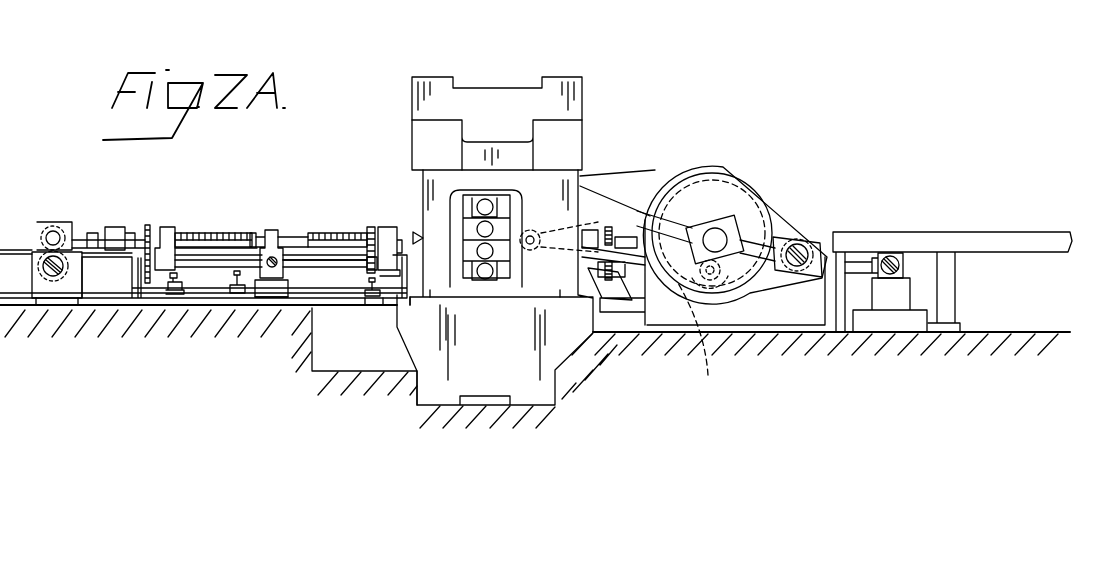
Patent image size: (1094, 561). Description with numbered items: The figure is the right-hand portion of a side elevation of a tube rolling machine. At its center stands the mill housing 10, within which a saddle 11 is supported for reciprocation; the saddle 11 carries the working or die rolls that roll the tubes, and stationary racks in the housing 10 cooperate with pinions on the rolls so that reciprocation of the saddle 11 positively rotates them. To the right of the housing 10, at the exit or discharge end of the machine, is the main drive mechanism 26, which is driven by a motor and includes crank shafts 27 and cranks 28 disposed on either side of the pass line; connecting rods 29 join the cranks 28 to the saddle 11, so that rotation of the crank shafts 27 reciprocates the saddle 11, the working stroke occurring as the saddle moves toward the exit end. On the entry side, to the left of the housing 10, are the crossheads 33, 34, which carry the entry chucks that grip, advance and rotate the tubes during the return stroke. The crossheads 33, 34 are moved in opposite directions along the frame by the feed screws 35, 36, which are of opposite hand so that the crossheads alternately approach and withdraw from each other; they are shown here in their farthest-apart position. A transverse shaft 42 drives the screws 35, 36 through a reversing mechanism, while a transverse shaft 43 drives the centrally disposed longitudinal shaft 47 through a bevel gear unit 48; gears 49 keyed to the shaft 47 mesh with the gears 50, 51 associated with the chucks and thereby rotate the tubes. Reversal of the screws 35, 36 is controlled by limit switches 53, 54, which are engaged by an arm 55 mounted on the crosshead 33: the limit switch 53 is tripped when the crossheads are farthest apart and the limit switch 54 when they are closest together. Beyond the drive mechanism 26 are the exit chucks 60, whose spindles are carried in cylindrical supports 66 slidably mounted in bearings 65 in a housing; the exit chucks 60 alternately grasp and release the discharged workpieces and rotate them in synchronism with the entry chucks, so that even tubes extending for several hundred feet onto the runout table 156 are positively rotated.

The mill housing 10 is at (586, 133).
The saddle 11 is at (515, 278).
The main drive mechanism 26 is at (755, 174).
The crank shaft 27 is at (728, 232).
The crank 28 is at (703, 328).
The connecting rod 29 is at (625, 263).
The crosshead 33 is at (165, 226).
The crosshead 34 is at (390, 228).
The feed screw 35 is at (360, 230).
The feed screw 36 is at (271, 231).
The transverse shaft 42 is at (53, 278).
The transverse shaft 43 is at (272, 282).
The longitudinal shaft 47 is at (273, 203).
The bevel gear unit 48 is at (288, 234).
The gear 49 is at (143, 285).
The gear 50 is at (145, 228).
The gear 51 is at (368, 228).
The limit switch 53 is at (192, 335).
The limit switch 54 is at (239, 292).
The arm 55 is at (124, 402).
The exit chuck 60 is at (590, 223).
The bearing 65 is at (893, 255).
The cylindrical support 66 is at (905, 270).
The runout table 156 is at (990, 233).